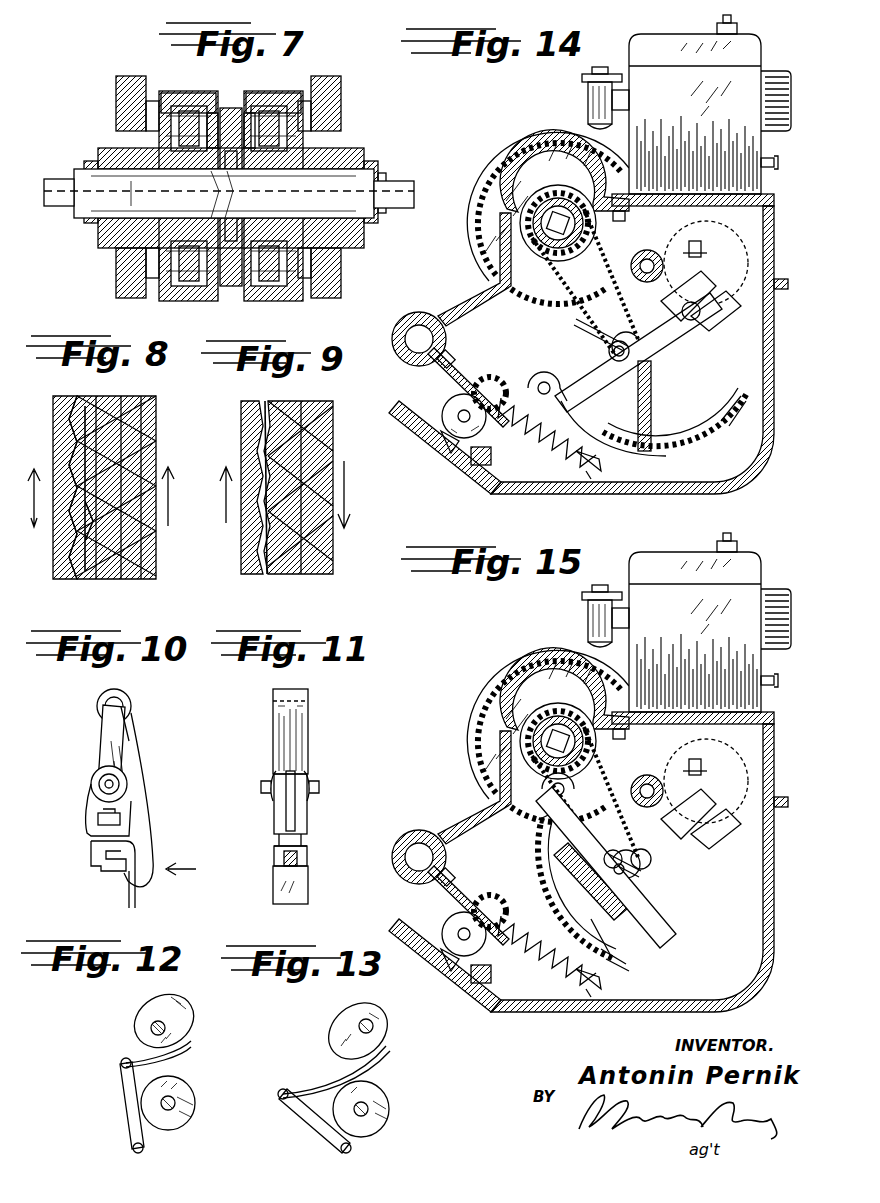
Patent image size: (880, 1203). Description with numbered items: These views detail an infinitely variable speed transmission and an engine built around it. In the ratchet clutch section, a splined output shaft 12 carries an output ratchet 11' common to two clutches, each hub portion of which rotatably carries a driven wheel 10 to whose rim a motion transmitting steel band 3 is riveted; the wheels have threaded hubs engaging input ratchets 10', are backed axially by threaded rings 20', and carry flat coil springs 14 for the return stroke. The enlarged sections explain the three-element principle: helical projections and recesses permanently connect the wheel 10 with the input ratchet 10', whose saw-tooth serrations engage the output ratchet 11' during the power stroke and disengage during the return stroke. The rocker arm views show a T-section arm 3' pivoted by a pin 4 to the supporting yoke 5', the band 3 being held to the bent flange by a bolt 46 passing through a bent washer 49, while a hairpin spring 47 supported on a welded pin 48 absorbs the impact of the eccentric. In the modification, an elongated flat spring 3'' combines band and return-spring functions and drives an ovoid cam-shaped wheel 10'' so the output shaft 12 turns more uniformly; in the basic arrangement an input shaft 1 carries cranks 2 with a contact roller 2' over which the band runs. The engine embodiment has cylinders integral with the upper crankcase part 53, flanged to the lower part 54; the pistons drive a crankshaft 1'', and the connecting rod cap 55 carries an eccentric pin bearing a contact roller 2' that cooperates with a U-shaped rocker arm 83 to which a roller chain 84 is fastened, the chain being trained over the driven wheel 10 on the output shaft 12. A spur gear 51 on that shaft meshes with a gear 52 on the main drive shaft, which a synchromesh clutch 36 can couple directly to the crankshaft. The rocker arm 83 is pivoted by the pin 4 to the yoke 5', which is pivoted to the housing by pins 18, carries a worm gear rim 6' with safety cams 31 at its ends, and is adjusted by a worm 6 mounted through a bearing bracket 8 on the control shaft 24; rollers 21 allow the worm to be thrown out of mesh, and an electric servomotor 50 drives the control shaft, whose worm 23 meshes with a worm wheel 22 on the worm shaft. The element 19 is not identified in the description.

In FIG. 12, the input shaft 1 is at (166, 1127).
In FIG. 13, the input shaft 1 is at (379, 1104).
In FIG. 14, the crankshaft 1'' is at (669, 258).
In FIG. 15, the crankshaft 1'' is at (669, 782).
In FIG. 12, the crank 2 is at (179, 1103).
In FIG. 13, the crank 2 is at (367, 1114).
In FIG. 14, the contact roller 2' is at (602, 339).
In FIG. 15, the contact roller 2' is at (597, 855).
In FIG. 7, the motion transmitting flexible steel band 3 is at (215, 204).
In FIG. 10, the rocker arm 3' is at (106, 788).
In FIG. 11, the rocker arm 3' is at (312, 731).
In FIG. 12, the rocker arm 3' is at (112, 1103).
In FIG. 13, the rocker arm 3' is at (299, 1121).
In FIG. 12, the elongated flat spring 3'' is at (172, 1050).
In FIG. 13, the elongated flat spring 3'' is at (348, 1072).
In FIG. 12, the pin 4 is at (130, 1148).
In FIG. 13, the pin 4 is at (350, 1150).
In FIG. 14, the pin 4 is at (543, 380).
In FIG. 15, the pin 4 is at (572, 781).
In FIG. 14, the supporting yoke 5' is at (626, 406).
In FIG. 15, the supporting yoke 5' is at (591, 881).
In FIG. 14, the worm 6 is at (580, 495).
In FIG. 15, the worm 6 is at (563, 1014).
In FIG. 14, the worm gear rim 6' is at (654, 429).
In FIG. 15, the worm gear rim 6' is at (551, 883).
In FIG. 14, the bearing bracket 8 is at (528, 440).
In FIG. 15, the bearing bracket 8 is at (549, 954).
In FIG. 7, the driven wheel 10 is at (189, 101).
In FIG. 8, the driven wheel 10 is at (123, 494).
In FIG. 9, the driven wheel 10 is at (316, 493).
In FIG. 14, the driven wheel 10 is at (565, 223).
In FIG. 15, the driven wheel 10 is at (558, 720).
In FIG. 7, the input ratchet 10' is at (272, 101).
In FIG. 8, the input ratchet 10' is at (97, 505).
In FIG. 9, the input ratchet 10' is at (266, 504).
In FIG. 12, the modified wheel 10'' is at (178, 1021).
In FIG. 13, the modified wheel 10'' is at (344, 1030).
In FIG. 7, the output ratchet 11' is at (224, 217).
In FIG. 8, the output ratchet 11' is at (49, 496).
In FIG. 9, the output ratchet 11' is at (232, 500).
In FIG. 7, the output shaft 12 is at (400, 190).
In FIG. 12, the output shaft 12 is at (150, 1027).
In FIG. 13, the output shaft 12 is at (372, 1027).
In FIG. 14, the output shaft 12 is at (565, 250).
In FIG. 15, the output shaft 12 is at (584, 794).
In FIG. 7, the flat coil spring 14 is at (115, 282).
In FIG. 14, the flat coil spring 14 is at (600, 183).
In FIG. 15, the flat coil spring 14 is at (581, 693).
In FIG. 14, the pivot pin 18 is at (645, 345).
In FIG. 15, the pivot pin 18 is at (652, 870).
In FIG. 14, the boss 19 is at (478, 466).
In FIG. 15, the boss 19 is at (482, 999).
In FIG. 7, the threaded ring 20' is at (224, 184).
In FIG. 14, the roller 21 is at (437, 330).
In FIG. 15, the roller 21 is at (468, 895).
In FIG. 14, the worm wheel 22 is at (489, 375).
In FIG. 15, the worm wheel 22 is at (494, 895).
In FIG. 14, the worm 23 is at (458, 440).
In FIG. 15, the worm 23 is at (462, 963).
In FIG. 14, the control shaft 24 is at (440, 440).
In FIG. 15, the control shaft 24 is at (435, 971).
In FIG. 14, the safety cam 31 is at (748, 395).
In FIG. 15, the safety cam 31 is at (628, 970).
In FIG. 14, the synchromesh clutch 36 is at (747, 262).
In FIG. 15, the synchromesh clutch 36 is at (733, 781).
In FIG. 10, the bolt 46 is at (97, 816).
In FIG. 11, the bolt 46 is at (293, 815).
In FIG. 10, the spring 47 is at (92, 778).
In FIG. 11, the spring 47 is at (262, 780).
In FIG. 10, the pin 48 is at (118, 783).
In FIG. 11, the pin 48 is at (318, 786).
In FIG. 10, the bent washer 49 is at (90, 845).
In FIG. 11, the bent washer 49 is at (300, 870).
In FIG. 14, the electric servomotor 50 is at (408, 425).
In FIG. 15, the electric servomotor 50 is at (419, 901).
In FIG. 14, the spur gear 51 is at (505, 170).
In FIG. 15, the spur gear 51 is at (548, 713).
In FIG. 14, the gear 52 is at (715, 330).
In FIG. 15, the gear 52 is at (692, 843).
In FIG. 14, the upper part of the crankcase 53 is at (775, 200).
In FIG. 15, the upper part of the crankcase 53 is at (692, 628).
In FIG. 14, the lower part of the crankcase 54 is at (745, 470).
In FIG. 15, the lower part of the crankcase 54 is at (588, 869).
In FIG. 14, the connecting rod cap 55 is at (712, 318).
In FIG. 15, the connecting rod cap 55 is at (720, 839).
In FIG. 14, the U-shaped rocker arm 83 is at (695, 335).
In FIG. 15, the U-shaped rocker arm 83 is at (606, 867).
In FIG. 14, the roller chain 84 is at (532, 292).
In FIG. 15, the roller chain 84 is at (521, 790).